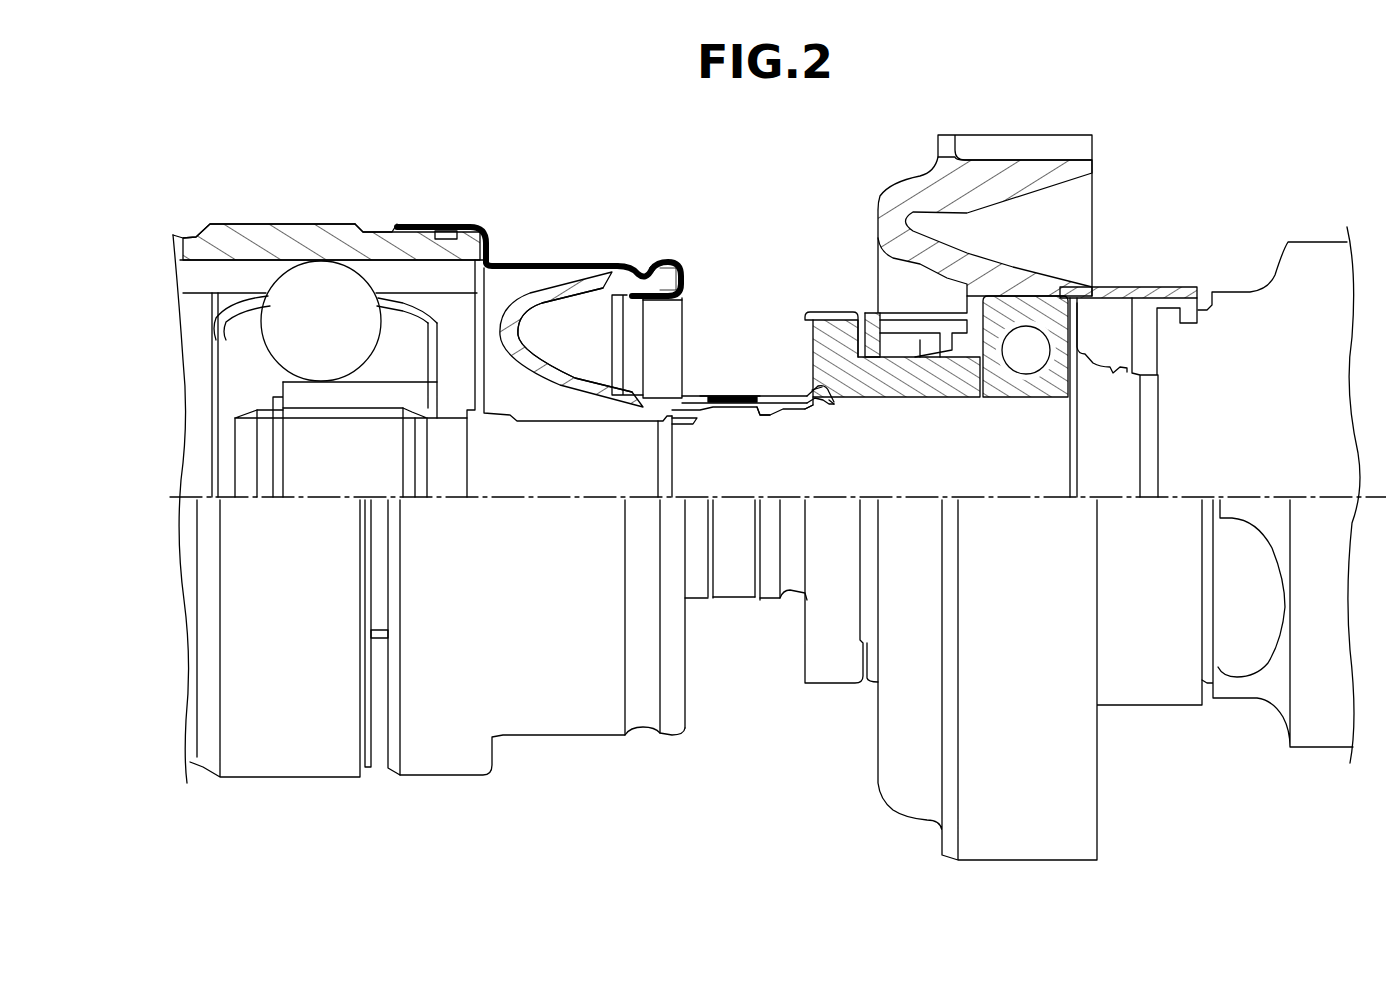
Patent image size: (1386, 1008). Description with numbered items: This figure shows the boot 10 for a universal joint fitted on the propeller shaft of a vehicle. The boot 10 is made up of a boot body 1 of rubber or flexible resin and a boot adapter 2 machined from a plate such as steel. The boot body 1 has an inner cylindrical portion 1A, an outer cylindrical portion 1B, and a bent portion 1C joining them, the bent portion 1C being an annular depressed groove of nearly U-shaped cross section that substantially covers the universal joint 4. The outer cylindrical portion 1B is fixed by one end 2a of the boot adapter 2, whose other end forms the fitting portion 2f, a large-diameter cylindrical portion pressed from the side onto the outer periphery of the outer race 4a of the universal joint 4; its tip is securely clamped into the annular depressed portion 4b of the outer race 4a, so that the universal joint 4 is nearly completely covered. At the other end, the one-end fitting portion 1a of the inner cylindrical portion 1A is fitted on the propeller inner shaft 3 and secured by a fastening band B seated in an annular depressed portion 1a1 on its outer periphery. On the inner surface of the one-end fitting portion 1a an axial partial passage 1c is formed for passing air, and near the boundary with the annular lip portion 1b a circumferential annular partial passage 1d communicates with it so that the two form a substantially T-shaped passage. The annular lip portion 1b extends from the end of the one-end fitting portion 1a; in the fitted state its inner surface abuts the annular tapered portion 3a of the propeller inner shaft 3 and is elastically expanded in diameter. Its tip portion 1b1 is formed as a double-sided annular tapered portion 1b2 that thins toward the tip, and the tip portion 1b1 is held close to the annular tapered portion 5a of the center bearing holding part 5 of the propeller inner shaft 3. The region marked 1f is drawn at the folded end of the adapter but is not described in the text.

The boot body 1 is at (670, 338).
The inner cylindrical portion 1A is at (718, 396).
The outer cylindrical portion 1B is at (662, 260).
The bent portion 1C is at (540, 355).
The one-end fitting portion 1a is at (738, 397).
The annular depressed portion 1a1 is at (757, 397).
The annular lip portion 1b is at (790, 397).
The tip portion 1b1 is at (807, 392).
The annular tapered portion 1b2 is at (833, 404).
The partial passage 1c is at (725, 424).
The annular partial passage 1d is at (773, 425).
The folded end 1f is at (672, 283).
The boot adapter 2 is at (536, 245).
The one end of the boot adapter 2a is at (645, 268).
The fitting portion 2f is at (433, 226).
The propeller inner shaft 3 is at (736, 484).
The annular tapered portion 3a is at (812, 407).
The universal joint 4 is at (312, 306).
The outer race 4a is at (338, 245).
The annular depressed portion 4b is at (363, 231).
The center bearing holding part 5 is at (830, 318).
The annular tapered portion 5a is at (825, 395).
The boot 10 is at (632, 168).
The fastening band B is at (710, 396).